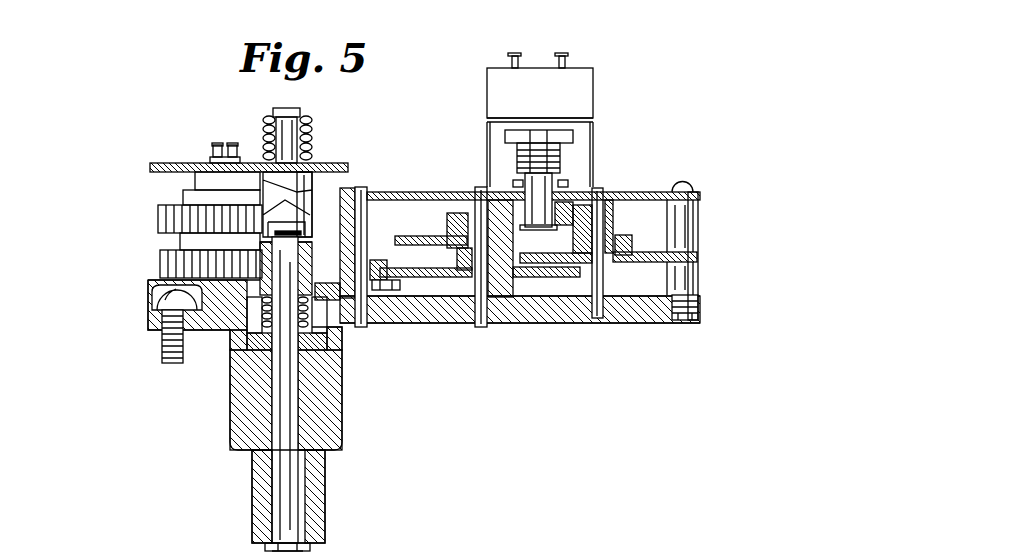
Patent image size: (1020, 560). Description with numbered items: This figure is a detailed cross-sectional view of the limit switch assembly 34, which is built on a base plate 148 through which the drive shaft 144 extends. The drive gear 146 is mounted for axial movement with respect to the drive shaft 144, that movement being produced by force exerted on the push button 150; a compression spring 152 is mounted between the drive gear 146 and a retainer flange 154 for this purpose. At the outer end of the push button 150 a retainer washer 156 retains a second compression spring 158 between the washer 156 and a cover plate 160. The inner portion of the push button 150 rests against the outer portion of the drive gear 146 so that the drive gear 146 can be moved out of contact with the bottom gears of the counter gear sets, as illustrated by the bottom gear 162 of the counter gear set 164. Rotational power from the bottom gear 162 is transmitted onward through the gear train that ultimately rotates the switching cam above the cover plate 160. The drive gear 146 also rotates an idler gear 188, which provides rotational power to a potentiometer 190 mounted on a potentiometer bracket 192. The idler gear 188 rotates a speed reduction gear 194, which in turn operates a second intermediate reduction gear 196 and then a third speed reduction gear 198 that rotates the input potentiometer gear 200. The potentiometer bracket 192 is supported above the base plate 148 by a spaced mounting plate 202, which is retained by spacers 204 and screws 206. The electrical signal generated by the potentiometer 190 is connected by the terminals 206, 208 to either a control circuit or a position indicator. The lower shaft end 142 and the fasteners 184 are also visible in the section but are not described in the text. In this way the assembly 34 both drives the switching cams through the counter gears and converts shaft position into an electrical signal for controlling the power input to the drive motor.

The limit switch assembly 34 is at (130, 180).
The lower shaft end 142 is at (315, 512).
The drive shaft 144 is at (300, 405).
The drive gear 146 is at (312, 243).
The base plate 148 is at (536, 320).
The push button 150 is at (299, 109).
The compression spring 152 is at (343, 338).
The retainer flange 154 is at (247, 340).
The retainer washer 156 is at (313, 126).
The second compression spring 158 is at (266, 140).
The cover plate 160 is at (156, 163).
The bottom gear 162 is at (160, 264).
The counter gear set 164 is at (158, 217).
The bolt 184 is at (212, 152).
The idler gear 188 is at (408, 325).
The potentiometer 190 is at (588, 84).
The potentiometer bracket 192 is at (497, 138).
The speed reduction gear 194 is at (570, 283).
The second intermediate reduction gear 196 is at (662, 250).
The third speed reduction gear 198 is at (440, 225).
The input potentiometer gear 200 is at (582, 186).
The spaced mounting plate 202 is at (641, 181).
The spacers 204 is at (700, 212).
The screws 206 is at (510, 52).
The terminal 208 is at (562, 52).